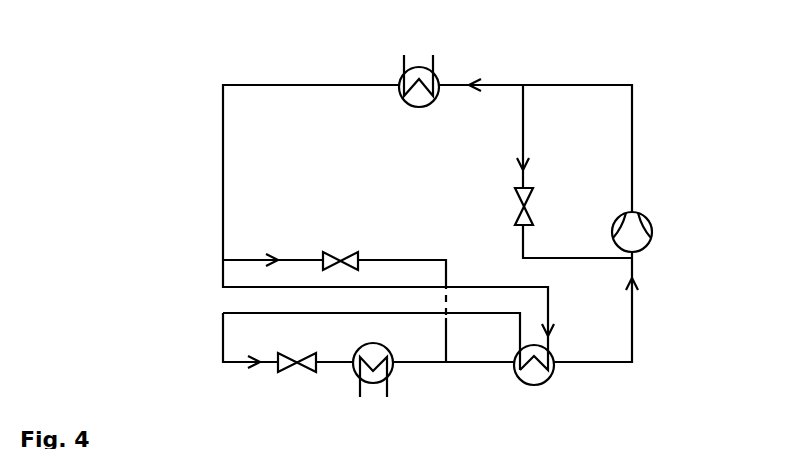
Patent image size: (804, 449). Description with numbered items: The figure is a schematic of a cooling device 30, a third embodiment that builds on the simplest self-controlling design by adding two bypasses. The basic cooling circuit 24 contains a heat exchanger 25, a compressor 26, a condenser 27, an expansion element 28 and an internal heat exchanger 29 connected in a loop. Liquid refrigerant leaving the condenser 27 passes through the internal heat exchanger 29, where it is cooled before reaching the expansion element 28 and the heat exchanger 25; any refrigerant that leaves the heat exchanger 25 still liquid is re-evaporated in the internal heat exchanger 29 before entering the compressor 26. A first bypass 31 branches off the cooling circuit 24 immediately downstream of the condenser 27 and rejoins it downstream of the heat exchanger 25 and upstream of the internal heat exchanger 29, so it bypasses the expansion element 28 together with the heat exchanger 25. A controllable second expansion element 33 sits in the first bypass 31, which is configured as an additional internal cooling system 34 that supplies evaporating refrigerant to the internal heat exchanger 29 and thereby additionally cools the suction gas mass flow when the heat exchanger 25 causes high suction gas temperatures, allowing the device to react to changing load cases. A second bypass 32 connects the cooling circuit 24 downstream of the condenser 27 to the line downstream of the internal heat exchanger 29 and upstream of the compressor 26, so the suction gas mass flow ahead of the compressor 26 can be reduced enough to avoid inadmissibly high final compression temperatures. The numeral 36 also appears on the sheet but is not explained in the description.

The cooling device 30 is at (151, 86).
The cooling circuit 24 is at (219, 181).
The heat exchanger 25 is at (375, 378).
The compressor 26 is at (630, 236).
The condenser 27 is at (421, 75).
The expansion element 28 is at (305, 372).
The internal heat exchanger 29 is at (531, 378).
The first bypass 31 is at (303, 250).
The second bypass 32 is at (533, 143).
The second expansion element 33 is at (357, 252).
The additional internal cooling system 34 is at (424, 250).
The component 36 is at (156, 436).